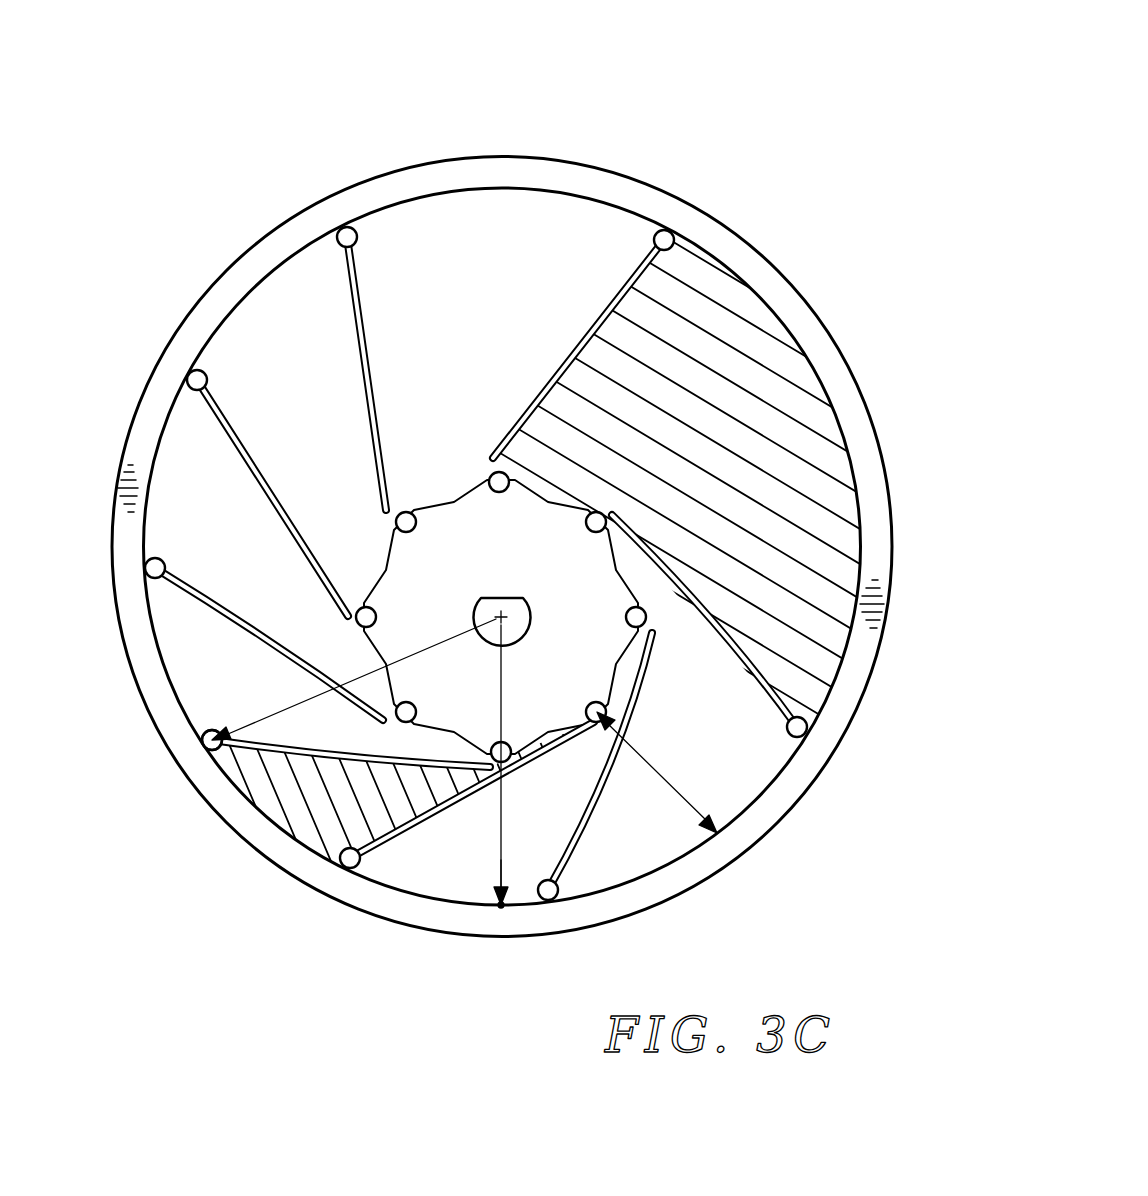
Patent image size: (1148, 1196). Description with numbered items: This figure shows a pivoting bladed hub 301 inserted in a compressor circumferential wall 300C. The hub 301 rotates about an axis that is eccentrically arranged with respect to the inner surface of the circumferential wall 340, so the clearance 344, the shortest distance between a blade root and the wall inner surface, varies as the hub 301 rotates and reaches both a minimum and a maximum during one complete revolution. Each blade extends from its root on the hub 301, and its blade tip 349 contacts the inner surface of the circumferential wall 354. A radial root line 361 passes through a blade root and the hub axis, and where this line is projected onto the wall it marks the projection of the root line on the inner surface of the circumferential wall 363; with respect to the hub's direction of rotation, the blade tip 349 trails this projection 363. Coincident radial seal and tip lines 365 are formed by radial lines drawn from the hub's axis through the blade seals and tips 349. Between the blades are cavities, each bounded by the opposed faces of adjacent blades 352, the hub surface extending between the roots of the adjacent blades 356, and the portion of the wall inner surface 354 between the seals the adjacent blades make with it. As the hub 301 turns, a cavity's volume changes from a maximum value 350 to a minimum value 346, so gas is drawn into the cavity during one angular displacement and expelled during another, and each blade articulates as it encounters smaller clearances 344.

The compressor circumferential wall 300C is at (797, 220).
The inner surface of the circumferential wall 340 is at (453, 195).
The inner surface of the circumferential wall 354 is at (274, 285).
The opposed faces of adjacent blades 352 is at (363, 434).
The hub surface extending between the roots of the adjacent blades 356 is at (370, 550).
The bladed hub 301 is at (507, 553).
The cavity at maximum volume 350 is at (765, 432).
The cavity at minimum volume 346 is at (300, 812).
The coincident radial seal and tip lines 365 is at (283, 700).
The blade tip 349 is at (212, 735).
The radial root line 361 is at (501, 855).
The projection of the root line on the inner surface of the circumferential wall 363 is at (507, 905).
The clearance 344 is at (697, 800).